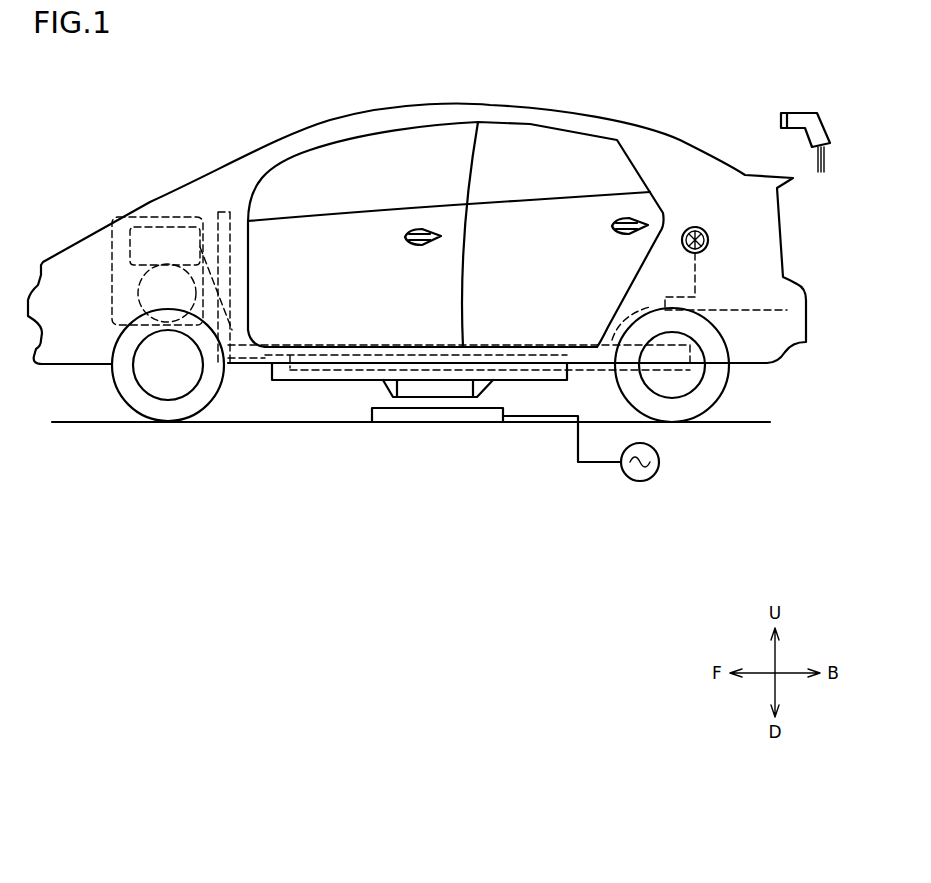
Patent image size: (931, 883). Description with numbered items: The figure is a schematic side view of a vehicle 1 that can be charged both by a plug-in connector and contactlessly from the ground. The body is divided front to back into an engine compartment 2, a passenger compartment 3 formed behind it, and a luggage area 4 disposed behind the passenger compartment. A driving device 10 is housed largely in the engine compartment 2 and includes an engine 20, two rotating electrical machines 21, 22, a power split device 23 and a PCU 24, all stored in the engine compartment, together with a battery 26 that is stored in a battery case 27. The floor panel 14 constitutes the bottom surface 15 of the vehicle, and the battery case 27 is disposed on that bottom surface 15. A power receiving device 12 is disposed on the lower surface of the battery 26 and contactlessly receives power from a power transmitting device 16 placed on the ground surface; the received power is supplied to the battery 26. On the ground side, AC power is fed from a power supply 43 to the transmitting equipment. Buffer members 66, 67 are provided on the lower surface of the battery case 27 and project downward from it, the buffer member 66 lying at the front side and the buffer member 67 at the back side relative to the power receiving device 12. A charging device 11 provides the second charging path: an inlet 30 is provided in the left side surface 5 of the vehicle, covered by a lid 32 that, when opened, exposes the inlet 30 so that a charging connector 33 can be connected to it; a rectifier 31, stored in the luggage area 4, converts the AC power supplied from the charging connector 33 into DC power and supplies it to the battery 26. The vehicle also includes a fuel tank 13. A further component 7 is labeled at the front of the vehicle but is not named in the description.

The vehicle 1 is at (515, 74).
The engine compartment 2 is at (197, 190).
The passenger compartment 3 is at (376, 149).
The luggage area 4 is at (689, 152).
The left side surface 5 is at (648, 165).
The front wheel 7 is at (115, 378).
The driving device 10 is at (115, 478).
The charging device 11 is at (760, 250).
The power receiving device 12 is at (407, 389).
The fuel tank 13 is at (593, 368).
The floor panel 14 is at (517, 347).
The bottom surface 15 is at (548, 347).
The power transmitting device 16 is at (453, 410).
The engine 20 is at (121, 300).
The rotating electrical machine 21 is at (188, 318).
The rotating electrical machine 22 is at (165, 246).
The power split device 23 is at (165, 246).
The PCU (power control unit) 24 is at (232, 330).
The battery 26 is at (300, 372).
The battery case 27 is at (330, 381).
The inlet 30 is at (708, 245).
The rectifier 31 is at (700, 297).
The lid 32 is at (697, 228).
The charging connector 33 is at (802, 120).
The power supply 43 is at (660, 462).
The buffer member 66 is at (386, 383).
The buffer member 67 is at (476, 391).